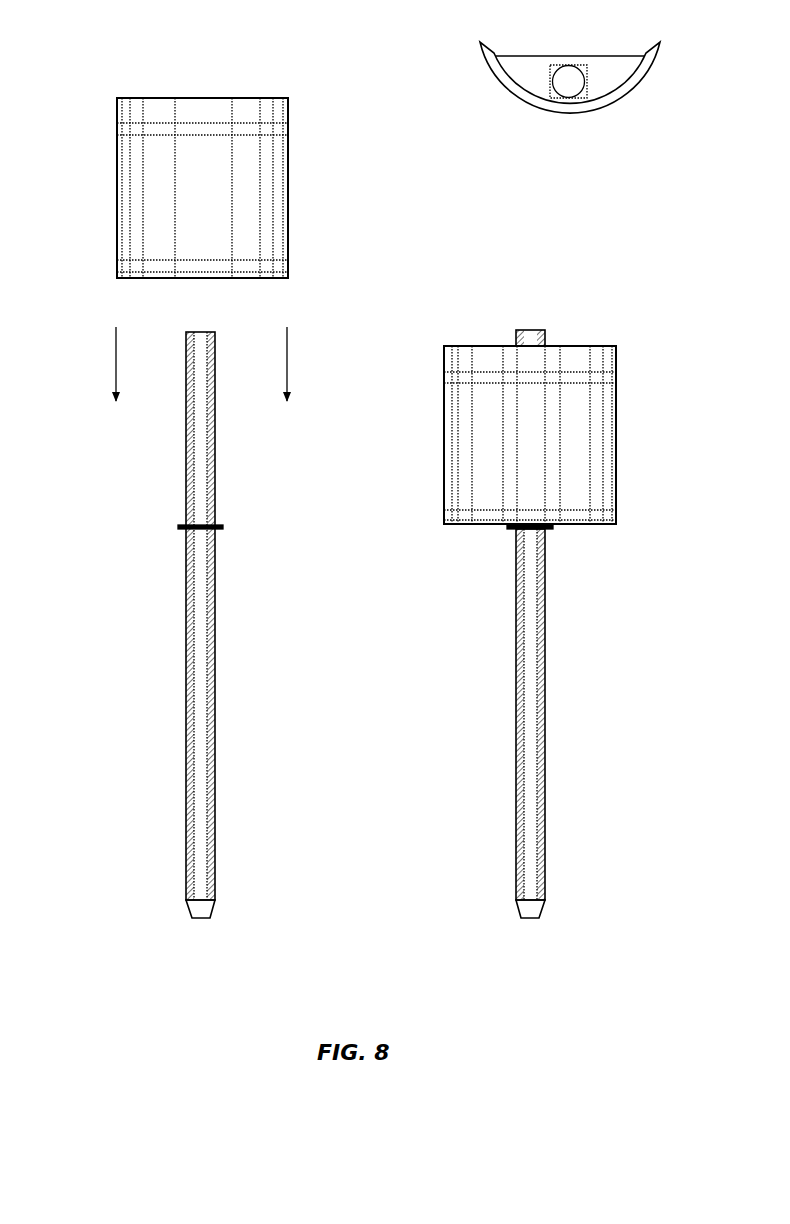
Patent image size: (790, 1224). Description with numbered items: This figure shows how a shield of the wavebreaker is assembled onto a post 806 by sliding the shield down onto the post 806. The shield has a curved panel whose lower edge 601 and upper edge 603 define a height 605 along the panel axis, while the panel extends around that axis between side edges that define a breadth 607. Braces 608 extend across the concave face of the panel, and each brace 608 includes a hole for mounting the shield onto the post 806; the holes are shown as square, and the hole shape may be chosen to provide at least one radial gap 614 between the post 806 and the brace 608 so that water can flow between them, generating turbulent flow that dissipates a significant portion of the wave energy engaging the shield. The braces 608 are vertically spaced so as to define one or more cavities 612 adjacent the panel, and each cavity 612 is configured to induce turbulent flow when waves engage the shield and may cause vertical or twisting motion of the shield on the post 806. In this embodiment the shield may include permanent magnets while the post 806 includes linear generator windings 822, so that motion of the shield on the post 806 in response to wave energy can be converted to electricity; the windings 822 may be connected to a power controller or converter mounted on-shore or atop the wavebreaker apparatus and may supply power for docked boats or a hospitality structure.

The lower edge 601 is at (282, 279).
The upper edge 603 is at (130, 96).
The height 605 is at (78, 99).
The breadth 607 is at (287, 300).
The brace 608 is at (266, 135).
The cavity 612 is at (578, 434).
The radial gap 614 is at (577, 93).
The post 806 is at (243, 546).
The linear generator windings 822 is at (208, 612).